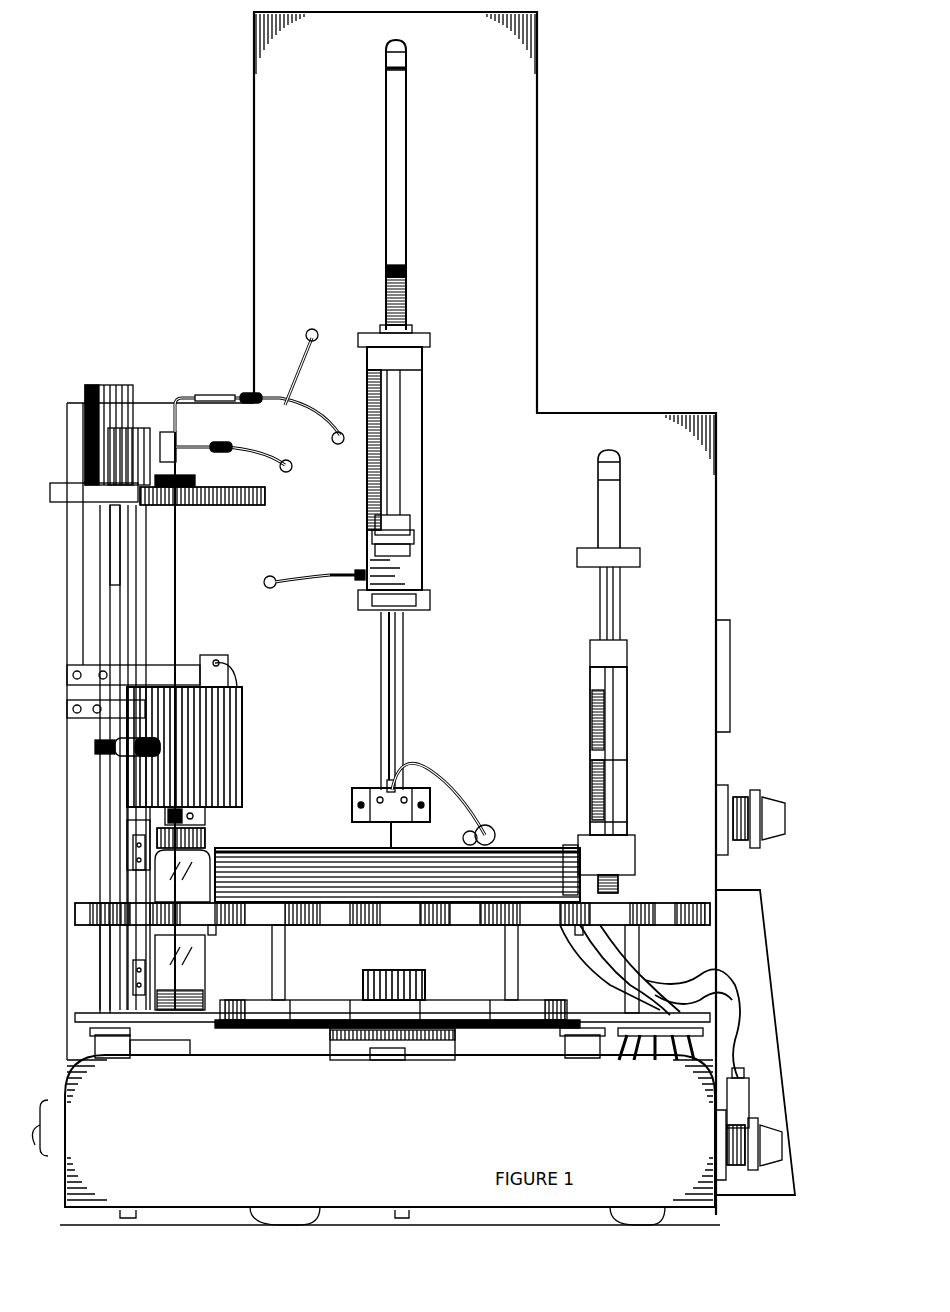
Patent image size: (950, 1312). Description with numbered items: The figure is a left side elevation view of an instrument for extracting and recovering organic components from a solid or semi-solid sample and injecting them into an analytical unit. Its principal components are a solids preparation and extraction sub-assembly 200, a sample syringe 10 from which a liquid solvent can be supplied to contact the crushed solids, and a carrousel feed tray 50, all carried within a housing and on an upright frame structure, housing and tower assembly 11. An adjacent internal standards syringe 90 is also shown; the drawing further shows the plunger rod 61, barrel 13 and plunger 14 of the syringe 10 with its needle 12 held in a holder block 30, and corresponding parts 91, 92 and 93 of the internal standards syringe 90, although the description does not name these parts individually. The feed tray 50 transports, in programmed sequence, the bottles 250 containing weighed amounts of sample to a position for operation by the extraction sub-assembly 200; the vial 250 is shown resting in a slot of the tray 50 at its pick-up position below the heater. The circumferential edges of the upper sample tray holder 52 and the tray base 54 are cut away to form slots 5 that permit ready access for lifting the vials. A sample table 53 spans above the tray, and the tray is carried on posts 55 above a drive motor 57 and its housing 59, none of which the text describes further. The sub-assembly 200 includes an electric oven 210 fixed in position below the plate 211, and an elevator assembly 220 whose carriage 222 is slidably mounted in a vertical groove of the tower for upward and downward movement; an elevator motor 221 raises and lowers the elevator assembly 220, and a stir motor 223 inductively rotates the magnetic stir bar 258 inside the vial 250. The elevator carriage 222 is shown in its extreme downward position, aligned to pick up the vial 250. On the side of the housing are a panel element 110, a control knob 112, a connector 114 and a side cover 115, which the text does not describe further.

The frame 11 is at (716, 510).
The syringe 10 is at (368, 325).
The needle 12 is at (397, 680).
The syringe barrel 13 is at (400, 410).
The plunger 14 is at (422, 500).
The plunger rod 61 is at (406, 315).
The needle holder block 30 is at (368, 788).
The carrousel feed tray 50 is at (648, 903).
The upper sample tray holder 52 is at (672, 903).
The sample table 53 is at (518, 845).
The tray base 54 is at (220, 1003).
The support post 55 is at (285, 972).
The drive motor 57 is at (383, 970).
The drive housing 59 is at (458, 1040).
The secondary syringe assembly 90 is at (628, 674).
The secondary syringe barrel 91 is at (627, 770).
The secondary plunger 92 is at (618, 702).
The secondary syringe holder 93 is at (612, 898).
The side panel switch 110 is at (732, 655).
The control knob 112 is at (778, 800).
The connector 114 is at (752, 1092).
The side cover 115 is at (790, 1175).
The solids preparation and extraction sub-assembly 200 is at (227, 740).
The electric oven 210 is at (232, 718).
The plate 211 is at (265, 495).
The elevator assembly 220 is at (130, 840).
The elevator motor 221 is at (108, 385).
The elevator carriage 222 is at (135, 862).
The stir motor 223 is at (175, 430).
The bottle 250 is at (208, 836).
The magnetic stir bar 258 is at (200, 990).
The slots 5 is at (100, 905).